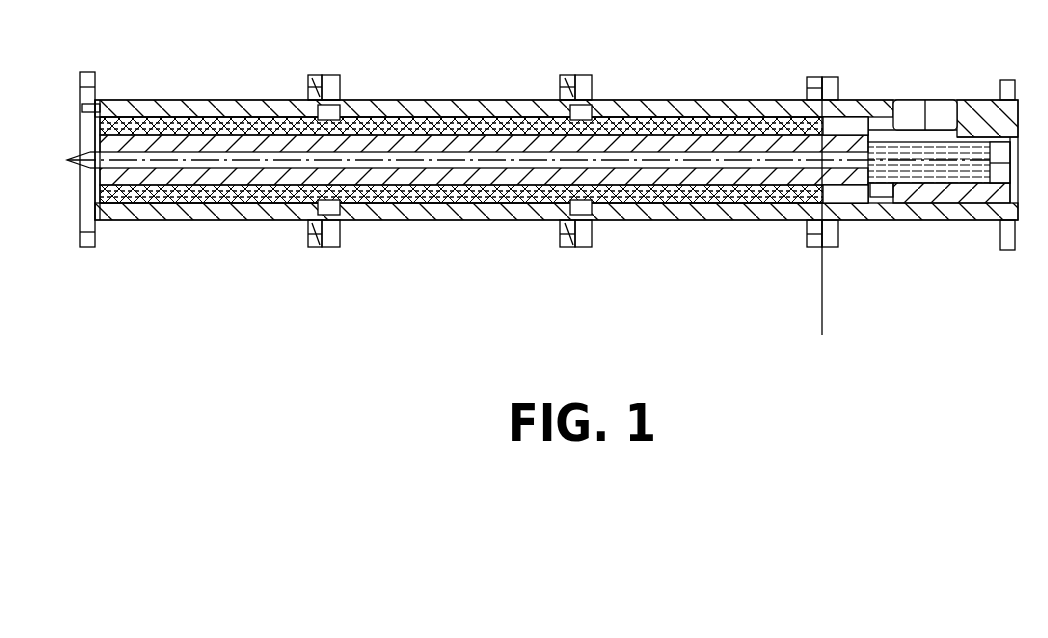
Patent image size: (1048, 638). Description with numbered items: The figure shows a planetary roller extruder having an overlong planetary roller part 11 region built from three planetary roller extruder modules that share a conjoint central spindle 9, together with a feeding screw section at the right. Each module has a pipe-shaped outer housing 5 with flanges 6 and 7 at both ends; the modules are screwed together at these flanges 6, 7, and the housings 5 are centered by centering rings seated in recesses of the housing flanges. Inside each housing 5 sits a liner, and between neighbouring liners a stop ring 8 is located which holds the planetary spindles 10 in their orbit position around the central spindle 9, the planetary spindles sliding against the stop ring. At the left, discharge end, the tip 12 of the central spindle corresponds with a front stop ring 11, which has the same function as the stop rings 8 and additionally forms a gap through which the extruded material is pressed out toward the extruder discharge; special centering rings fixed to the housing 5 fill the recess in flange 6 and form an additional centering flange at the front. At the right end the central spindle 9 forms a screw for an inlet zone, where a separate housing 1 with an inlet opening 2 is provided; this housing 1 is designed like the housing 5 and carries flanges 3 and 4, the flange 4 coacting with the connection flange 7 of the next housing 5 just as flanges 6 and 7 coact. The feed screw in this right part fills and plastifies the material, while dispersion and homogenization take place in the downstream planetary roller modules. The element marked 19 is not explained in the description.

The housing 1 is at (973, 213).
The inlet opening 2 is at (913, 112).
The flange 3 is at (1010, 250).
The flange 4 is at (833, 250).
The outer housing 5 is at (672, 108).
The flange 6 is at (86, 80).
The flange 7 is at (312, 82).
The stop ring 8 is at (587, 80).
The central spindle 9 is at (383, 170).
The planetary spindles 10 is at (207, 117).
The front stop ring 11 is at (90, 128).
The tip of the central spindle 12 is at (87, 162).
The insert 19 is at (887, 193).